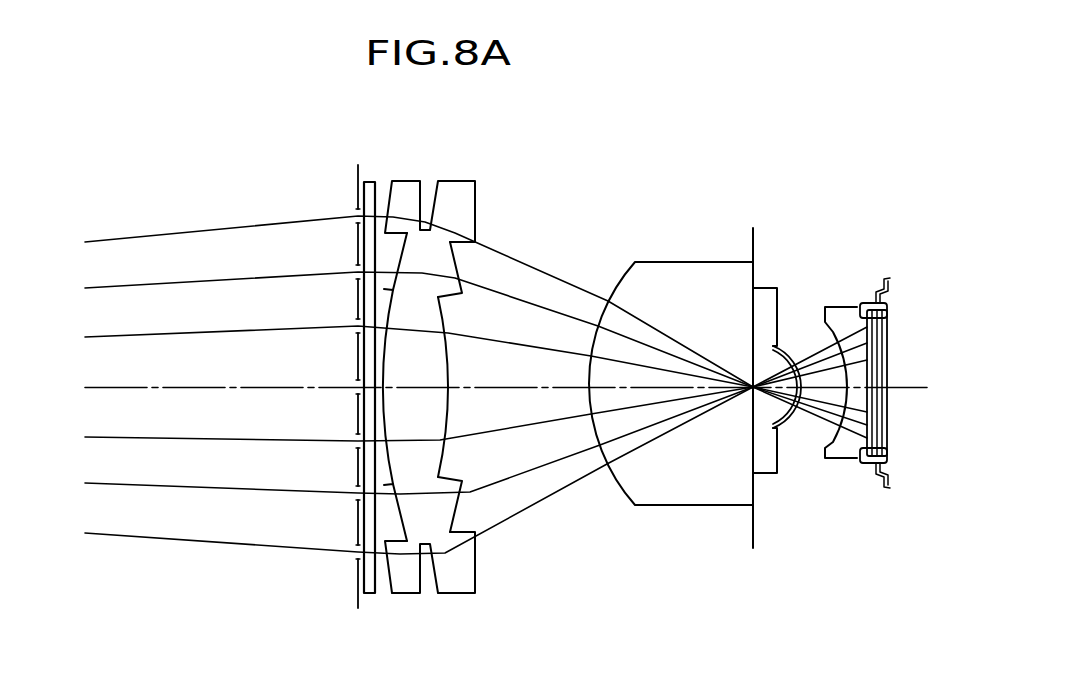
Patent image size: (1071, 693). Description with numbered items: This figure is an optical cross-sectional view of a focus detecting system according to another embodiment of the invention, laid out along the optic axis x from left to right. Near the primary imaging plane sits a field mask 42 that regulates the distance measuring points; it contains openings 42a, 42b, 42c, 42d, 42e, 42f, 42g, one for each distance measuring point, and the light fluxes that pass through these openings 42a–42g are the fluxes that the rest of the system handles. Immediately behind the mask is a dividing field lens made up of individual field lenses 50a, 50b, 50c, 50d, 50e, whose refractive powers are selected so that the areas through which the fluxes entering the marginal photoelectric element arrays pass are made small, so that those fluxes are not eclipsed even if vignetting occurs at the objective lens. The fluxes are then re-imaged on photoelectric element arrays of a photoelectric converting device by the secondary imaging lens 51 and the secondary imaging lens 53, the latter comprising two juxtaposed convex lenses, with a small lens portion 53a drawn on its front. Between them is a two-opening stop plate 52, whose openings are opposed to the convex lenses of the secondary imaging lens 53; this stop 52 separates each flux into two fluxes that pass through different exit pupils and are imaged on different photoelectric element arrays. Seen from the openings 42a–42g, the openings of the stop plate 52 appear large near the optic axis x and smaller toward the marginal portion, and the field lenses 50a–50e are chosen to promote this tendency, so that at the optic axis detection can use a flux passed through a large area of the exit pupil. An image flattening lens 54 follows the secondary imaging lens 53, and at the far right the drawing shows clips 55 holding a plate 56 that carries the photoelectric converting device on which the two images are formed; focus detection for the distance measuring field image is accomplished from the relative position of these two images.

The optical axis x is at (115, 392).
The field mask 42 is at (358, 596).
The opening 42a is at (357, 213).
The opening 42b is at (358, 270).
The opening 42c is at (358, 323).
The opening 42d is at (358, 380).
The opening 42e is at (358, 437).
The opening 42f is at (358, 491).
The opening 42g is at (358, 548).
The field lens 50a is at (392, 181).
The field lens 50b is at (385, 255).
The field lens 50c is at (385, 357).
The field lens 50d is at (390, 522).
The field lens 50e is at (392, 593).
The secondary imaging lens 51 is at (663, 493).
The two-opening stop plate 52 is at (752, 528).
The secondary imaging lens 53 is at (767, 473).
The small lens 53a is at (787, 347).
The image flattening lens 54 is at (843, 461).
The clip 55 is at (870, 322).
The light receiving element plate 56 is at (883, 440).